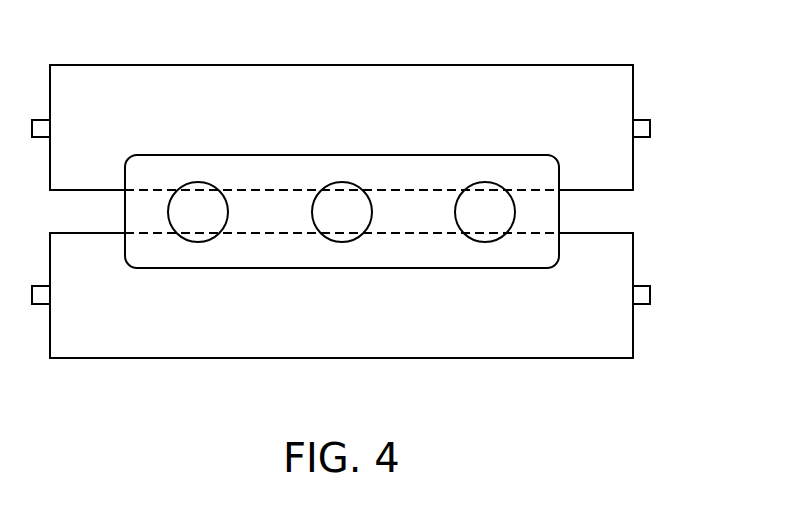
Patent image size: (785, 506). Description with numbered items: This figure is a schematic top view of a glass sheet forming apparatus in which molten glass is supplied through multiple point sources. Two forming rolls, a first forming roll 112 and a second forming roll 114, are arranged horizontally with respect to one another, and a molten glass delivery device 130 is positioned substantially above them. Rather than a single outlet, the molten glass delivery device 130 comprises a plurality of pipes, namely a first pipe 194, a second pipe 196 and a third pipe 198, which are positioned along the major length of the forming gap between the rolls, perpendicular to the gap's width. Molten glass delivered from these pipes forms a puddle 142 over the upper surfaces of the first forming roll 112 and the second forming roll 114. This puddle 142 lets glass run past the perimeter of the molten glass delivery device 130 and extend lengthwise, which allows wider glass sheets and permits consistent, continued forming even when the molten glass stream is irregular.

The second forming roll 114 is at (495, 65).
The first forming roll 112 is at (495, 358).
The puddle 142 is at (172, 155).
The first pipe 194 is at (198, 243).
The second pipe 196 is at (342, 243).
The third pipe 198 is at (485, 243).
The molten glass delivery device 130 is at (648, 200).